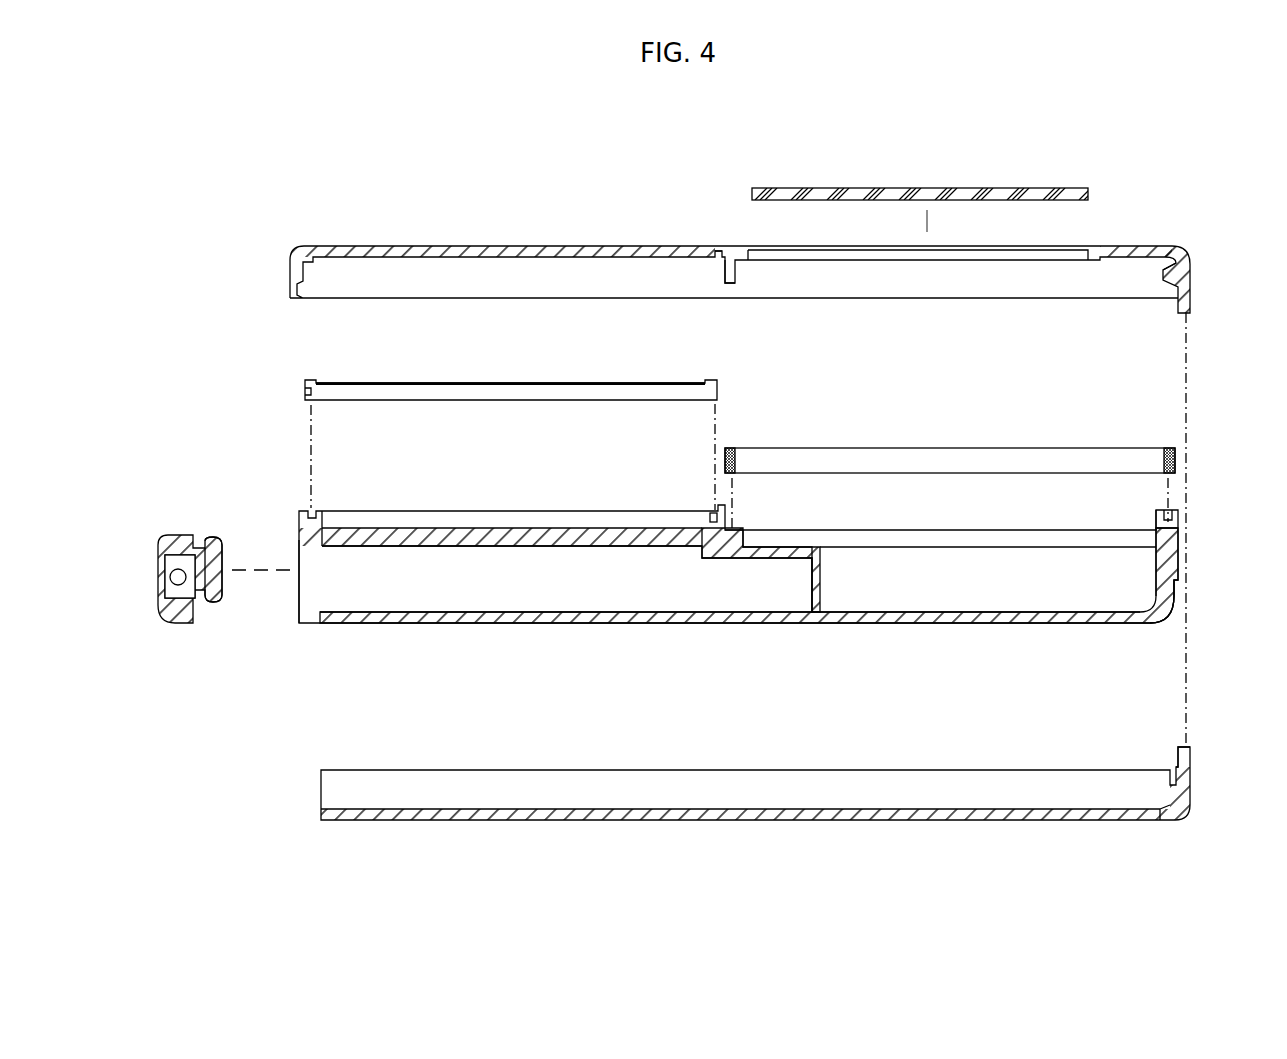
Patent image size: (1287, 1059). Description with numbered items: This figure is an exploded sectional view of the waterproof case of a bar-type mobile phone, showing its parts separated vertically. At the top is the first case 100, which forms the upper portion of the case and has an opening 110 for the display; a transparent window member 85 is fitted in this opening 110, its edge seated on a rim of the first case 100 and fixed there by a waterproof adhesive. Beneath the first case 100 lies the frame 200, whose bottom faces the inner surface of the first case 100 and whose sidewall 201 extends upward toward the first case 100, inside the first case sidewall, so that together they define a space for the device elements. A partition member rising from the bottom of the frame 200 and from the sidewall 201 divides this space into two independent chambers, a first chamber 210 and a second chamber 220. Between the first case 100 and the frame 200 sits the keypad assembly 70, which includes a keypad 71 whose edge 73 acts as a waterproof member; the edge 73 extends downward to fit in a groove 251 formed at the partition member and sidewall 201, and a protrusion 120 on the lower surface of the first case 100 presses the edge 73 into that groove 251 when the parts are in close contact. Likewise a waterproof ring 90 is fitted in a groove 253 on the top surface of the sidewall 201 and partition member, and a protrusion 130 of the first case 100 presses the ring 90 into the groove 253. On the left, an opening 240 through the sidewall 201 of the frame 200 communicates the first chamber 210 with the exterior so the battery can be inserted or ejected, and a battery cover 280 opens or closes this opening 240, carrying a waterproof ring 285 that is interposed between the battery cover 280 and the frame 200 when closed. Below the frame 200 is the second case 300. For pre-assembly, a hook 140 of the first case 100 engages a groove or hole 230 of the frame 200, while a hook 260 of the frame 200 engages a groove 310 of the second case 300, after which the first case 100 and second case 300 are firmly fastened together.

The first case 100 is at (598, 244).
The opening 110 is at (1085, 253).
The protrusion 120 is at (708, 262).
The protrusion 130 is at (734, 278).
The hook 140 is at (1165, 272).
The window member 85 is at (899, 187).
The keypad assembly 70 is at (448, 386).
The keypad 71 is at (528, 386).
The edge 73 is at (303, 388).
The waterproof ring 90 is at (937, 447).
The frame 200 is at (744, 530).
The first chamber 210 is at (566, 579).
The second chamber 220 is at (949, 571).
The groove 251 is at (712, 511).
The groove 253 is at (736, 528).
The sidewall 201 is at (1165, 560).
The grooves or holes 230 is at (1165, 520).
The hook 260 is at (1172, 590).
The opening 240 is at (305, 598).
The battery cover 280 is at (160, 537).
The waterproof ring 285 is at (215, 537).
The second case 300 is at (780, 822).
The groove 310 is at (1175, 770).